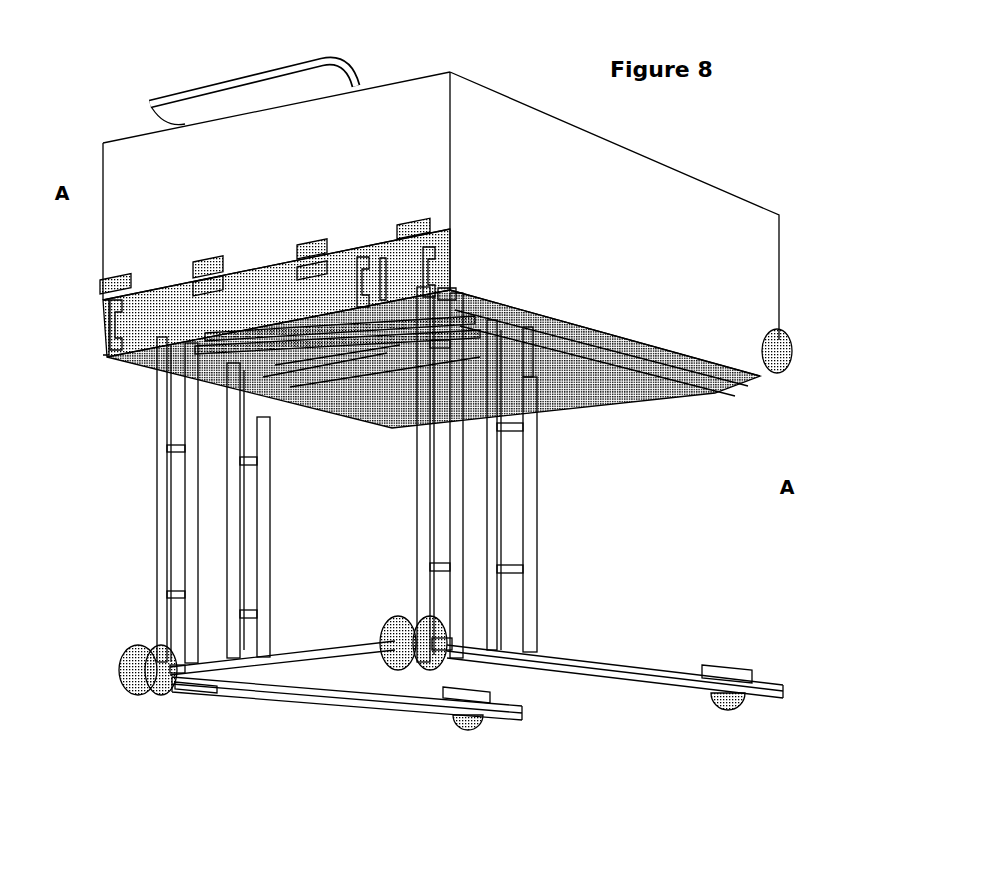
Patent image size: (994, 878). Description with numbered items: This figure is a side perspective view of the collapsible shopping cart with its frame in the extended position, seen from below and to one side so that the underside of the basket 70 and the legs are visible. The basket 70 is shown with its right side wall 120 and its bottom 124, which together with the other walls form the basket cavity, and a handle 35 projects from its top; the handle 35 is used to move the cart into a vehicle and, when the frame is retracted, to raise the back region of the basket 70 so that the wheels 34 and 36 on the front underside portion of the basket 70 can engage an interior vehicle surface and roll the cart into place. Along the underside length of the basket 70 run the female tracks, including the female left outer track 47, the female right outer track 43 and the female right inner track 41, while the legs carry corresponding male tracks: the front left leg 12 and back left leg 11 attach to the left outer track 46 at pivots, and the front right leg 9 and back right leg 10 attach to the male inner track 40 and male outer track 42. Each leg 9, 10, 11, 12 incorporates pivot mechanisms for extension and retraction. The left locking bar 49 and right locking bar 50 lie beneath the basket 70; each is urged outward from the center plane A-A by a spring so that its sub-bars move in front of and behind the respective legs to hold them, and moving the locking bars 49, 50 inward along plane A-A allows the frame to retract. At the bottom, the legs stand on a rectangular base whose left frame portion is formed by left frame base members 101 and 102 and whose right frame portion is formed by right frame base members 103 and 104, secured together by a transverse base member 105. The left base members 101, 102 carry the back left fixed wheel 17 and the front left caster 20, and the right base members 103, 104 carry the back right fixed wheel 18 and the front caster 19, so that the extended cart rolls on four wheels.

The basket 70 is at (405, 61).
The right side wall 120 is at (614, 224).
The bottom 124 is at (630, 393).
The handle 35 is at (222, 82).
The wheel 34 is at (790, 355).
The male inner track 40 is at (387, 253).
The female configured right inner track 41 is at (362, 250).
The male outer track 42 is at (452, 267).
The female configured right outer track 43 is at (457, 293).
The left outer track 46 is at (107, 313).
The female configured left outer track 47 is at (107, 349).
The left locking bar 49 is at (233, 330).
The right locking bar 50 is at (267, 322).
The back right leg 10 is at (407, 442).
The back left leg 11 is at (157, 452).
The front left leg 12 is at (282, 467).
The wheel 36 is at (443, 443).
The front right leg 9 is at (542, 443).
The back left fixed wheel 17 is at (133, 697).
The back right fixed wheel 18 is at (408, 615).
The front caster 19 is at (737, 713).
The front left caster 20 is at (462, 730).
The left frame base member 101 is at (313, 710).
The left frame base member 102 is at (367, 690).
The right frame base member 103 is at (642, 667).
The right frame base member 104 is at (617, 693).
The traverse base member 105 is at (213, 690).